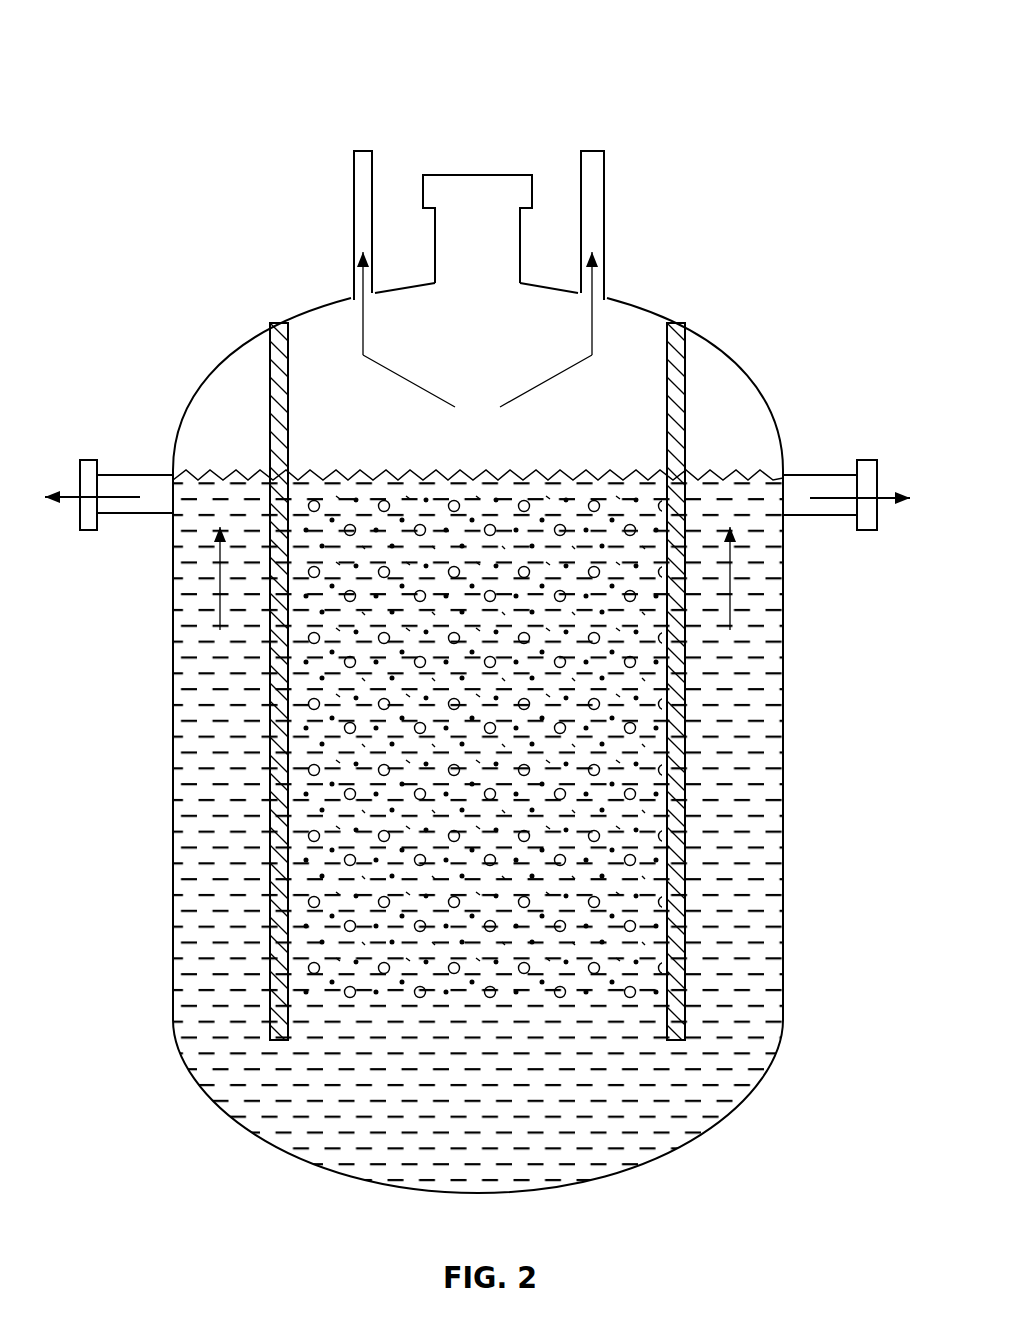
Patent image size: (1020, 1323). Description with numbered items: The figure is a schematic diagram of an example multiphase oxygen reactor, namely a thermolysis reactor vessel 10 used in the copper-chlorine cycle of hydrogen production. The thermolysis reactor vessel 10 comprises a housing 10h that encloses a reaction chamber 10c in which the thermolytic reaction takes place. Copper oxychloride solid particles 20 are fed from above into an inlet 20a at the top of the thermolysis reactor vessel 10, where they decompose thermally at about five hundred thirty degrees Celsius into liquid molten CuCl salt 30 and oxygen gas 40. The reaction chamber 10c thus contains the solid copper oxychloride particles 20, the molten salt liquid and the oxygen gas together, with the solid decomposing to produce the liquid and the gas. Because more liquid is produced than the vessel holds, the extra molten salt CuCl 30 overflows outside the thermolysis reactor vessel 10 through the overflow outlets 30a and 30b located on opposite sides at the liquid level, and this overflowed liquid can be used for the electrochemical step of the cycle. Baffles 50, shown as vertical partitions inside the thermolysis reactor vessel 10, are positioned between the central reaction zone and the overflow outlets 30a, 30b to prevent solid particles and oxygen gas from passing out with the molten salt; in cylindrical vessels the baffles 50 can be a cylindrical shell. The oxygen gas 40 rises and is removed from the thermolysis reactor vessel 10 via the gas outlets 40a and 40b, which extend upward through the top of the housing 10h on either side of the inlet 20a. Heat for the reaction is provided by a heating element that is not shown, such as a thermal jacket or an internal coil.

The thermolysis reactor vessel 10 is at (766, 398).
The reaction chamber 10c is at (457, 1026).
The housing 10h is at (763, 1063).
The copper oxychloride solid particles 20 is at (477, 165).
The inlet 20a is at (440, 172).
The liquid molten CuCl salt 30 is at (188, 518).
The overflow outlet 30a is at (877, 480).
The overflow outlet 30b is at (80, 477).
The oxygen gas 40 is at (850, 937).
The gas outlet 40a is at (357, 148).
The gas outlet 40b is at (597, 147).
The baffles 50 is at (268, 362).